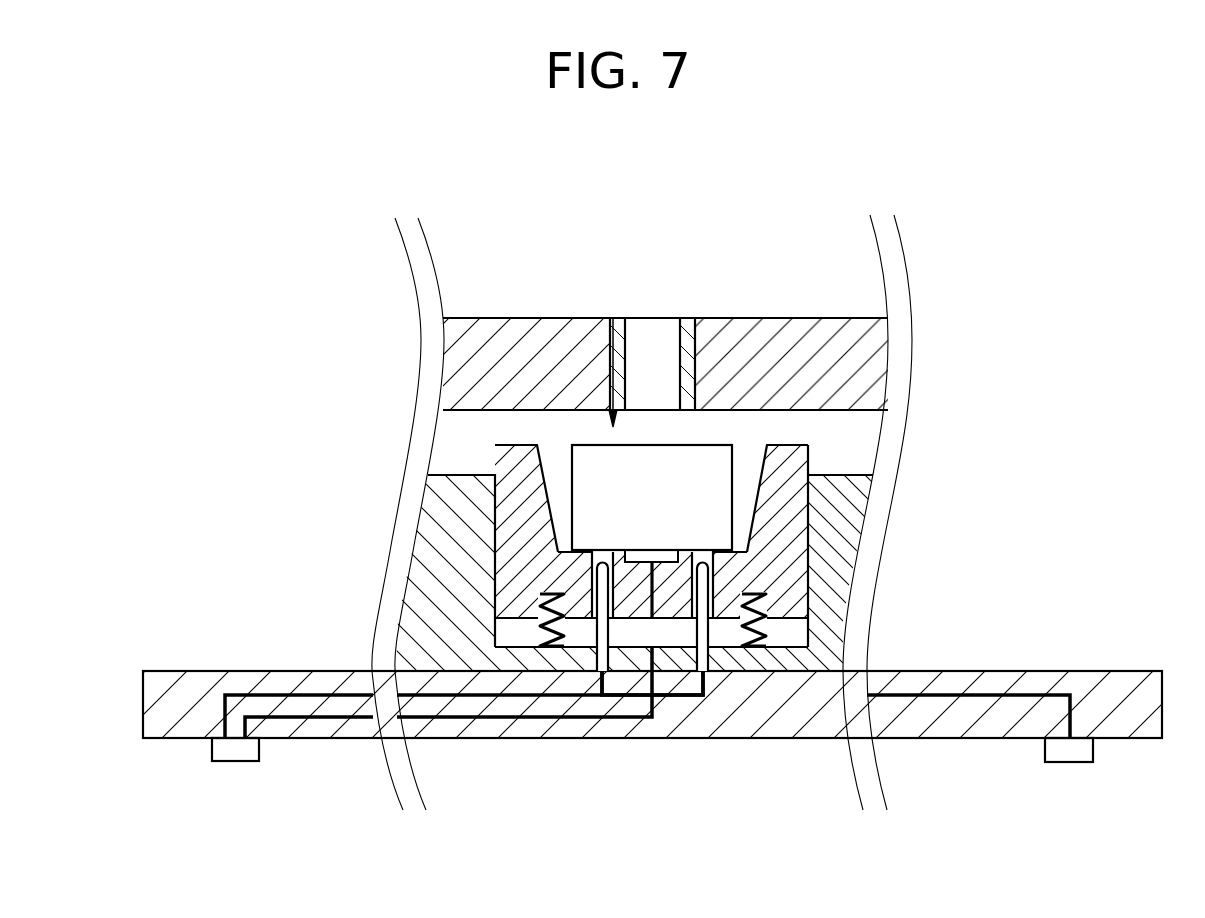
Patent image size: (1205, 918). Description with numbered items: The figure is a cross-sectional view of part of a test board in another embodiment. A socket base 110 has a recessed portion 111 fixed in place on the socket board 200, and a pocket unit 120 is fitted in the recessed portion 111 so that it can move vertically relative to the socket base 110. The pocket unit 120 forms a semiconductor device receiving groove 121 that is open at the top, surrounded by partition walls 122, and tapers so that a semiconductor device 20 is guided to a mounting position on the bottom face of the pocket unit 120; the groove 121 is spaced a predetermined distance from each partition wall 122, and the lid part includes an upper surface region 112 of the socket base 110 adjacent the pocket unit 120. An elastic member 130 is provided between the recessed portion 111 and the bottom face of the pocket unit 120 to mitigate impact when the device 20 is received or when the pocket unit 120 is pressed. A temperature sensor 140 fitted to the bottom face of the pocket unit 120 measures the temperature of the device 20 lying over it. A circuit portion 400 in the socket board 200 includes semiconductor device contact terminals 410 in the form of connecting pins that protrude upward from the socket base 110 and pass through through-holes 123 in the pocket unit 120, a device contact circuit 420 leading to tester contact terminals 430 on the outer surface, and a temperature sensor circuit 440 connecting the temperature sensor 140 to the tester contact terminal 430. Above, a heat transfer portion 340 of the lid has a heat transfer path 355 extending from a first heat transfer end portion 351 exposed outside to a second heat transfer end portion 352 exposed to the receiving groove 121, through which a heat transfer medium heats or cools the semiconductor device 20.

The semiconductor device 20 is at (718, 504).
The socket base 110 is at (850, 510).
The recessed portion 111 is at (790, 647).
The upper surface of housing 112 is at (860, 474).
The pocket unit 120 is at (517, 523).
The semiconductor device receiving groove 121 is at (558, 492).
The partition wall 122 is at (513, 445).
The through-hole 123 is at (597, 578).
The elastic member 130 is at (763, 648).
The temperature sensor 140 is at (670, 550).
The socket board 200 is at (1122, 671).
The heat transfer portion 340 is at (705, 292).
The first heat transfer end portion 351 is at (620, 319).
The second heat transfer end portion 352 is at (612, 412).
The heat transfer path 355 is at (690, 350).
The circuit portion 400 is at (648, 765).
The semiconductor device contact terminal 410 is at (608, 655).
The device contact circuit 420 is at (472, 695).
The tester contact terminal 430 is at (235, 788).
The temperature sensor circuit 440 is at (553, 717).